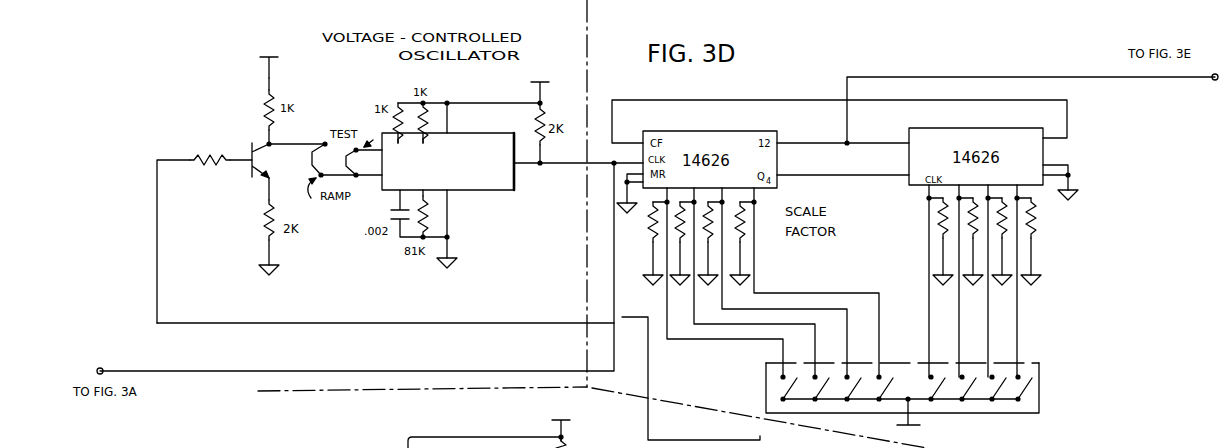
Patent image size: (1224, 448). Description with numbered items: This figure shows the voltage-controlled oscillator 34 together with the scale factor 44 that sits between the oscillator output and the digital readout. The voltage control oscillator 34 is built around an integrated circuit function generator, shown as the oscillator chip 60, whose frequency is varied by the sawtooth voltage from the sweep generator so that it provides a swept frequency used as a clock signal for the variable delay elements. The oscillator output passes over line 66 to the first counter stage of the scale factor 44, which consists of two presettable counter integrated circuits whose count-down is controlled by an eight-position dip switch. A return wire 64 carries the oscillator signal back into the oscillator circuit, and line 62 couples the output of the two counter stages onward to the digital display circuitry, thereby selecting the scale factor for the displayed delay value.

The voltage control oscillator 34 is at (174, 190).
The 8038 function generator (voltage-controlled oscillator IC) 60 is at (488, 190).
The line 62 is at (933, 77).
The feedback line 64 is at (440, 323).
The line 66 is at (590, 175).
The scale factor 44 is at (730, 349).